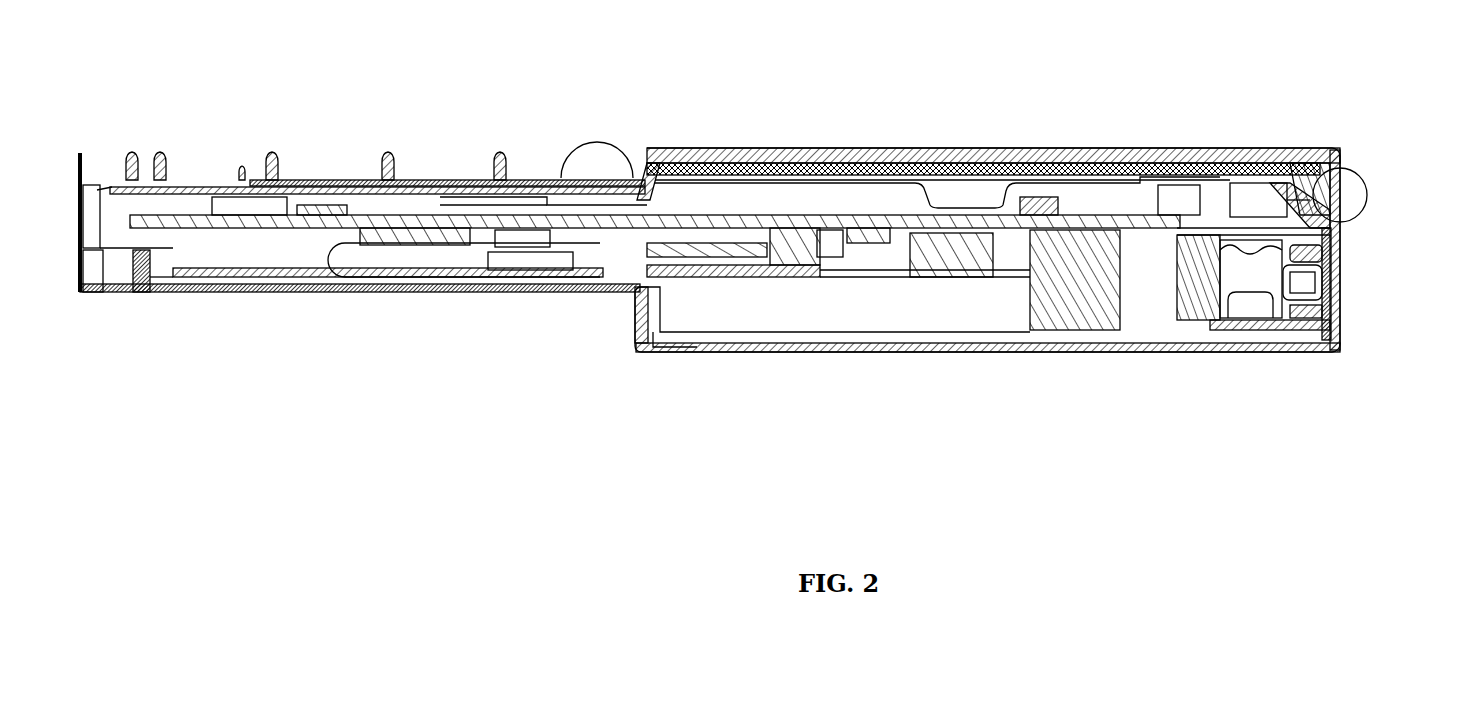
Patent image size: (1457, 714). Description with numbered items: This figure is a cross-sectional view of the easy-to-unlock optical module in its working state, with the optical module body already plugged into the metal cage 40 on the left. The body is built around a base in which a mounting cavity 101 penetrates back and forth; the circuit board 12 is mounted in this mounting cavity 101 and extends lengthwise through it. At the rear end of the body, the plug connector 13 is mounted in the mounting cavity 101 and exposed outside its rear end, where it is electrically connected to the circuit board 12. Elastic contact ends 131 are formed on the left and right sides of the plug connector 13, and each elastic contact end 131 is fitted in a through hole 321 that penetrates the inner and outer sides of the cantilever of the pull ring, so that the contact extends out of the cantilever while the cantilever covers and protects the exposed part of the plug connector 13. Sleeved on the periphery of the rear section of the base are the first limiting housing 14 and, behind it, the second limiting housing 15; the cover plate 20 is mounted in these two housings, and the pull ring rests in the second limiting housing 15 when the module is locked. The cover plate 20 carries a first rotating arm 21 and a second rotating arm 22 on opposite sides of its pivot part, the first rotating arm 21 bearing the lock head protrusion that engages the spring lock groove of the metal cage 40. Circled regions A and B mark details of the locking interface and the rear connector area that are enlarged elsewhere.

The circuit board 12 is at (797, 247).
The plug connector 13 is at (1257, 287).
The first limiting housing 14 is at (872, 148).
The second limiting housing 15 is at (1138, 150).
The cover plate 20 is at (713, 165).
The first rotating arm 21 is at (660, 148).
The second rotating arm 22 is at (1235, 173).
The metal cage 40 is at (320, 187).
The mounting cavity 101 is at (886, 308).
The elastic contact end 131 is at (1337, 270).
The through hole 321 is at (1327, 253).
The detail region A is at (585, 146).
The detail region B is at (1363, 193).